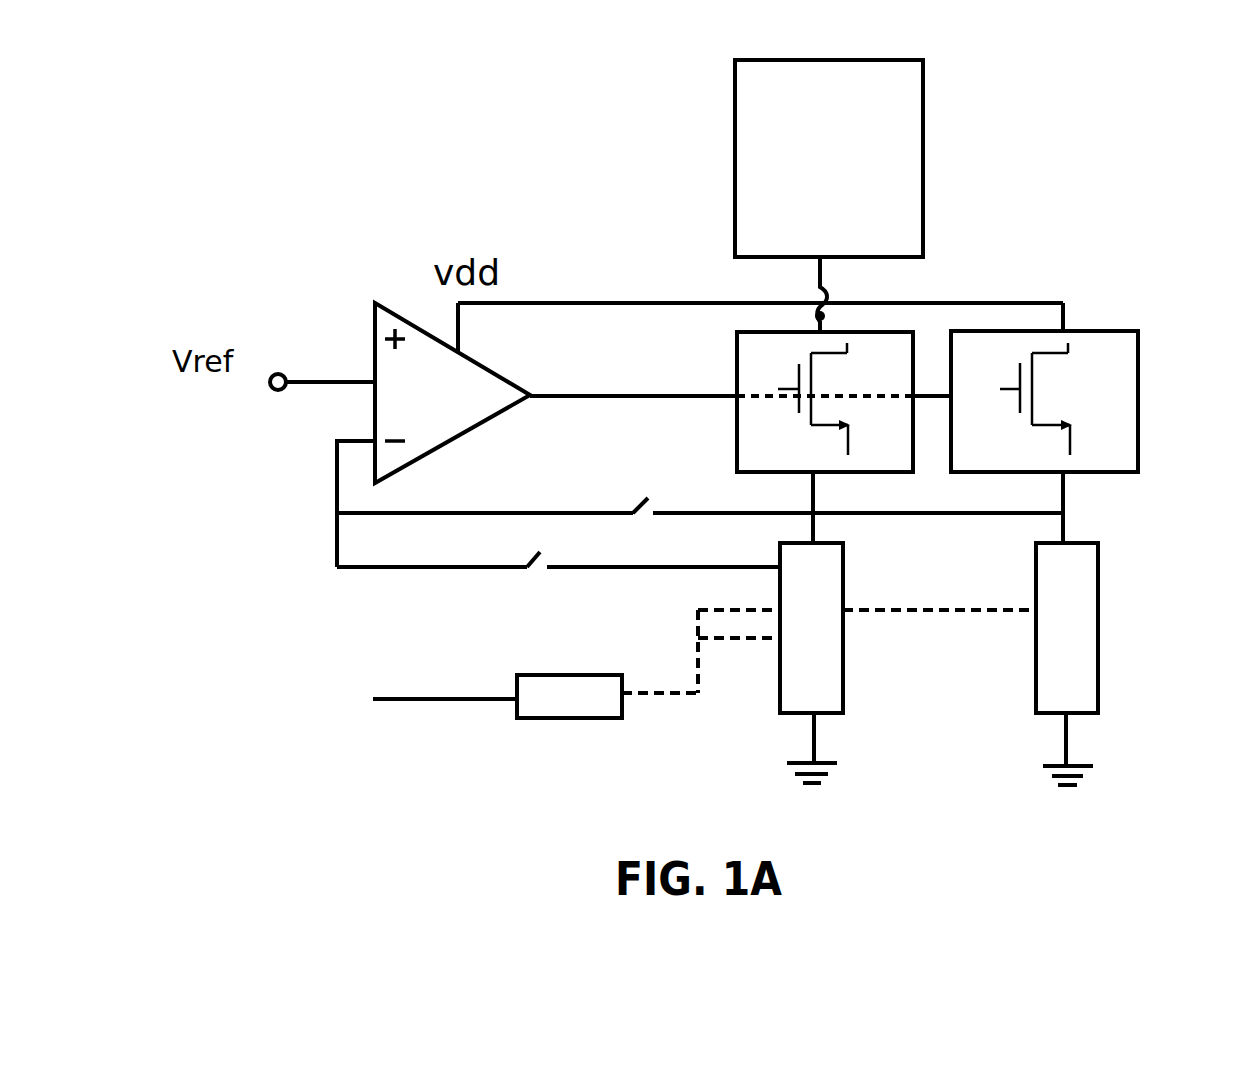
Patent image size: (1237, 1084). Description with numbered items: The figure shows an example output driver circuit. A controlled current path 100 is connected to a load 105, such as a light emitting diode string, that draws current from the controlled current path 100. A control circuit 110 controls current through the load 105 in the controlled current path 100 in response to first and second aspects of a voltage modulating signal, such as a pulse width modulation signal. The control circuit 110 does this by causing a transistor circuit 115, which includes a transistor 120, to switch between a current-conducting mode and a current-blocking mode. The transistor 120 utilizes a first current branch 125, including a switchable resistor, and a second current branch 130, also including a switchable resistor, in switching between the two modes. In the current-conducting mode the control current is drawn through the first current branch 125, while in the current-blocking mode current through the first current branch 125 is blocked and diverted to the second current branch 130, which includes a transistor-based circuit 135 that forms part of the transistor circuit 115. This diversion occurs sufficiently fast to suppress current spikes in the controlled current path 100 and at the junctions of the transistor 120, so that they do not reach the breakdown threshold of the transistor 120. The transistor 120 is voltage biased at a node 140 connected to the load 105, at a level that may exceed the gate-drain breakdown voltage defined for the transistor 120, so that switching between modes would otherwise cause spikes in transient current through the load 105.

The controlled current path 100 is at (822, 273).
The load 105 is at (923, 165).
The control circuit 110 is at (518, 720).
The transistor circuit 115 is at (737, 422).
The transistor 120 is at (811, 425).
The first current branch 125 is at (843, 687).
The second current branch 130 is at (1098, 692).
The transistor-based circuit 135 is at (1138, 472).
The node 140 is at (814, 317).